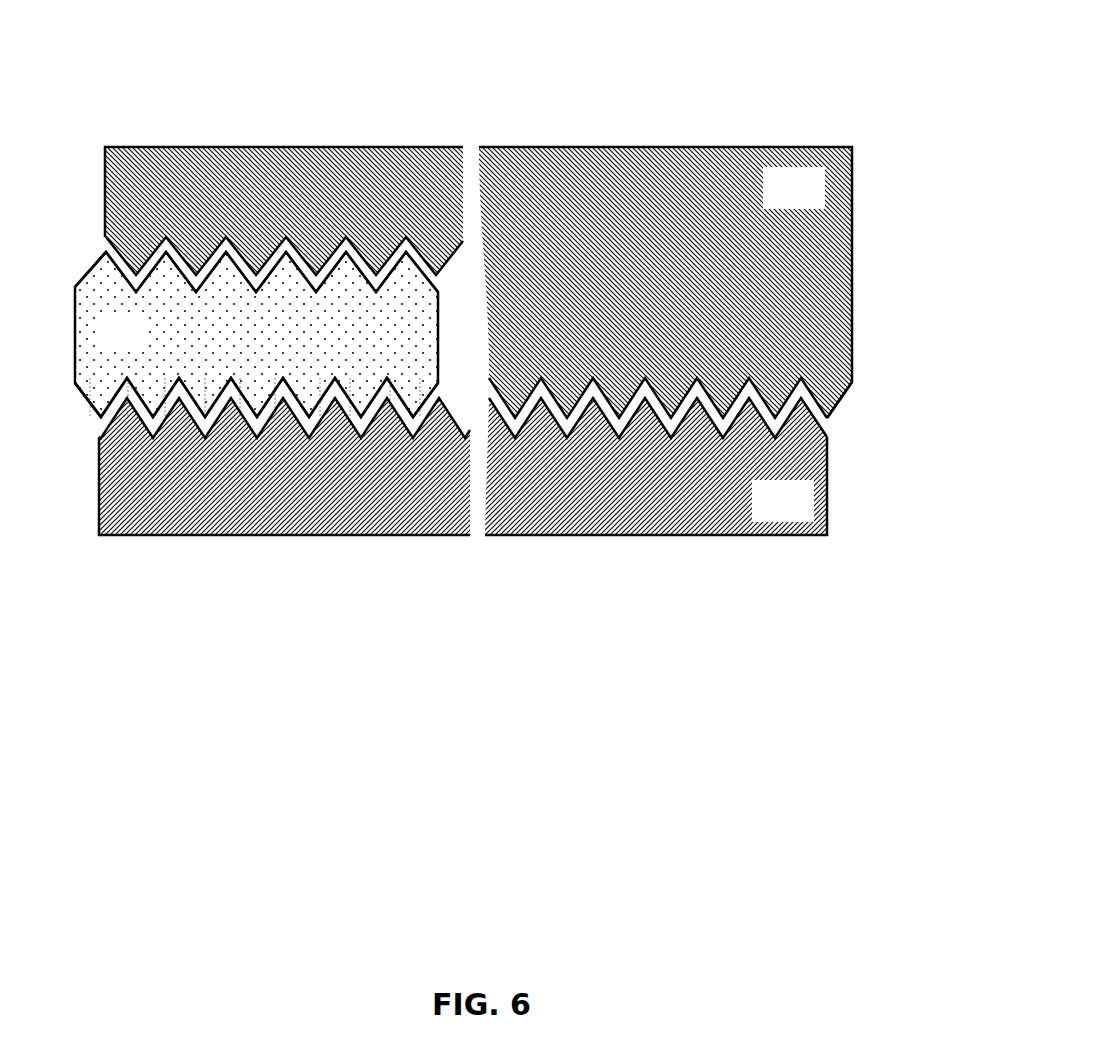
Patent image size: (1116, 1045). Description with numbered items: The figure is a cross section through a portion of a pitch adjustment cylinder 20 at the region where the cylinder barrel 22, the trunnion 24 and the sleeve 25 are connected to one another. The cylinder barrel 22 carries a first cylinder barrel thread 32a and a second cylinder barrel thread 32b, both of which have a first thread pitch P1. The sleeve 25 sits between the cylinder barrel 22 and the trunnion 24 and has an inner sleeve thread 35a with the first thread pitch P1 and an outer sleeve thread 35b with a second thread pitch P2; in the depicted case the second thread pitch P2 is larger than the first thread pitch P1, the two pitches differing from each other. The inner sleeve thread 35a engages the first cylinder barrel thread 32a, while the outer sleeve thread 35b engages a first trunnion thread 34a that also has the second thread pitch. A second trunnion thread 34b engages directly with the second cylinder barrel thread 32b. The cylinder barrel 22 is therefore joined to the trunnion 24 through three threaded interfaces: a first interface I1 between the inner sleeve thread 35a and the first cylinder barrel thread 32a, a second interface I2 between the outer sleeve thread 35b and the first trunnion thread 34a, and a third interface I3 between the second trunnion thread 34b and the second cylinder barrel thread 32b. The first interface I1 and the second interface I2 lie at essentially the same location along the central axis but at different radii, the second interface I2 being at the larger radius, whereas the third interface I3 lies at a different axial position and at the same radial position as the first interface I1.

The pitch adjustment cylinder 20 is at (168, 108).
The cylinder barrel 22 is at (800, 517).
The trunnion 24 is at (810, 204).
The sleeve 25 is at (137, 346).
The first cylinder barrel thread 32a is at (278, 437).
The second cylinder barrel thread 32b is at (697, 420).
The first trunnion thread 34a is at (255, 250).
The second trunnion thread 34b is at (670, 378).
The inner sleeve thread 35a is at (358, 402).
The outer sleeve thread 35b is at (345, 273).
The first interface I1 is at (90, 424).
The second interface I2 is at (90, 245).
The third interface I3 is at (831, 421).
The first thread pitch P1 is at (389, 367).
The second thread pitch P2 is at (317, 309).